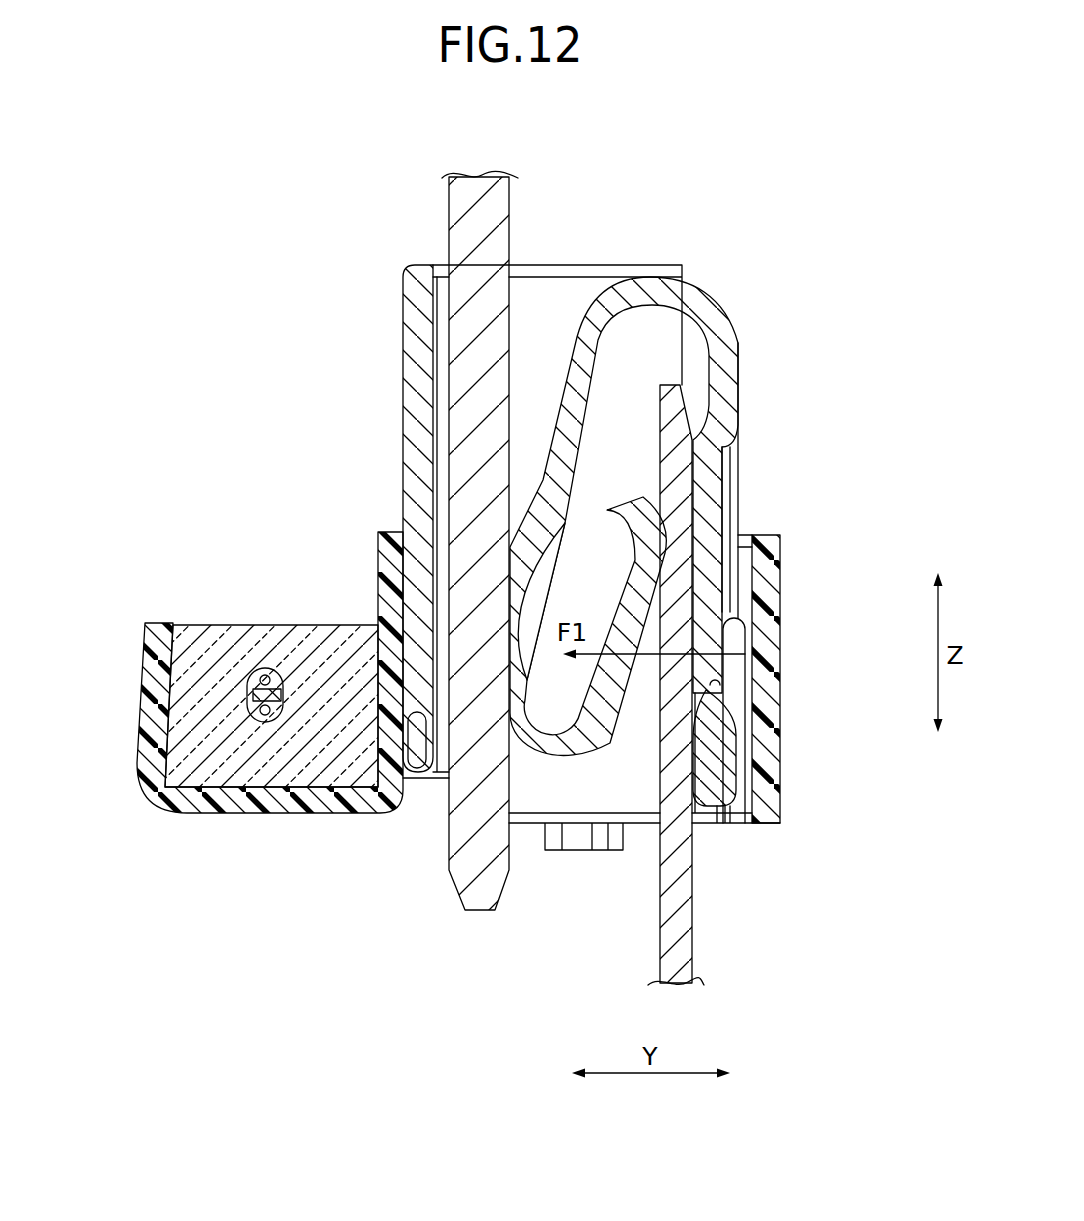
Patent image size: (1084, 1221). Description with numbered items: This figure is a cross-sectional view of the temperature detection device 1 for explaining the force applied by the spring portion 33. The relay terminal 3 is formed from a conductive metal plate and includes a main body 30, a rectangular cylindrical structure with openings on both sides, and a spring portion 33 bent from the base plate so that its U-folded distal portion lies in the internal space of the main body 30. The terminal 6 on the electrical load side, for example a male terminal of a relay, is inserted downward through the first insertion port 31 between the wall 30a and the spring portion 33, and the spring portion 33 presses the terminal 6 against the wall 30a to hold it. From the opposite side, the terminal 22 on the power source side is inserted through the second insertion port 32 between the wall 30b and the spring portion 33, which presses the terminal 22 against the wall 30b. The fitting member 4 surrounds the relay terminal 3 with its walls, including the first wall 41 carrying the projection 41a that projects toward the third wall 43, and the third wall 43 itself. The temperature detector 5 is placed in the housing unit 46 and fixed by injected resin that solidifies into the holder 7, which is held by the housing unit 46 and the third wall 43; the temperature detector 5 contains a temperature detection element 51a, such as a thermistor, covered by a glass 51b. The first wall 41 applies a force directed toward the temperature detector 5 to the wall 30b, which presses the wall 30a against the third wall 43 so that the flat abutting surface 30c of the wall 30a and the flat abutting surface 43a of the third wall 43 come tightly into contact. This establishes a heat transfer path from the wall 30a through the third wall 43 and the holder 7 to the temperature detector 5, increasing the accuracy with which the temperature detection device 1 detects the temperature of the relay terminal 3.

The temperature detection device 1 is at (348, 441).
The relay terminal 3 is at (669, 240).
The fitting member 4 is at (806, 512).
The temperature detector 5 is at (233, 657).
The terminal 6 is at (448, 203).
The holder 7 is at (209, 633).
The terminal 22 is at (692, 925).
The main body 30 is at (388, 314).
The wall 30a is at (402, 277).
The wall 30b is at (731, 823).
The abutting surface 30c is at (390, 713).
The first insertion port 31 is at (545, 254).
The second insertion port 32 is at (641, 838).
The spring portion 33 is at (590, 287).
The first wall 41 is at (792, 562).
The projection 41a is at (723, 688).
The third wall 43 is at (378, 525).
The abutting surface 43a is at (413, 783).
The housing unit 46 is at (122, 688).
The temperature detection element 51a is at (283, 702).
The glass 51b is at (263, 668).